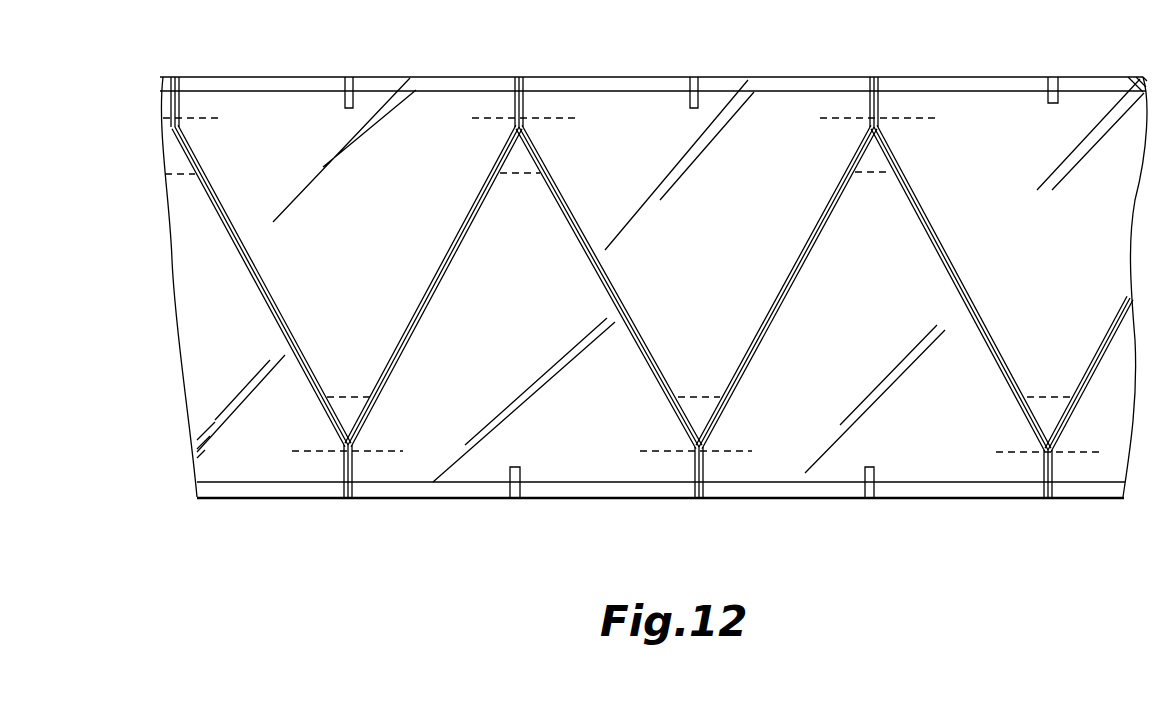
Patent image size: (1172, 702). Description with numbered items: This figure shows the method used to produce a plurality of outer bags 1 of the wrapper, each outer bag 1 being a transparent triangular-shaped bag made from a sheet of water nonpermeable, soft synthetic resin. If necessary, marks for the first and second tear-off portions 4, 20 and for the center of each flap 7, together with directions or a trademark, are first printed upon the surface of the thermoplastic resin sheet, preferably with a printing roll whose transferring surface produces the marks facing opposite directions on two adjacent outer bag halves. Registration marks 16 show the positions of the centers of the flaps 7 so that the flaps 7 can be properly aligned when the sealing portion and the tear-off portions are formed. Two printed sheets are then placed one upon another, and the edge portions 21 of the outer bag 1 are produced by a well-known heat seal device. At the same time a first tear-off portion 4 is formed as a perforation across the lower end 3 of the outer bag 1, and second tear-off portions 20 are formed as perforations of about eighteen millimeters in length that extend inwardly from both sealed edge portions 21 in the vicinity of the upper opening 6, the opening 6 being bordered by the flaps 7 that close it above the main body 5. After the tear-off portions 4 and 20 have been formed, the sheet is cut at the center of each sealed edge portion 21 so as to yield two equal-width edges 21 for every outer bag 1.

The outer bag 1 is at (670, 280).
The lower end 3 is at (177, 153).
The tear-off portion 4 is at (186, 175).
The main body 5 is at (260, 498).
The upper opening 6 is at (304, 77).
The flap 7 is at (318, 452).
The registration mark 16 is at (350, 77).
The second tear-off portion 20 is at (210, 118).
The edge portion 21 is at (275, 300).